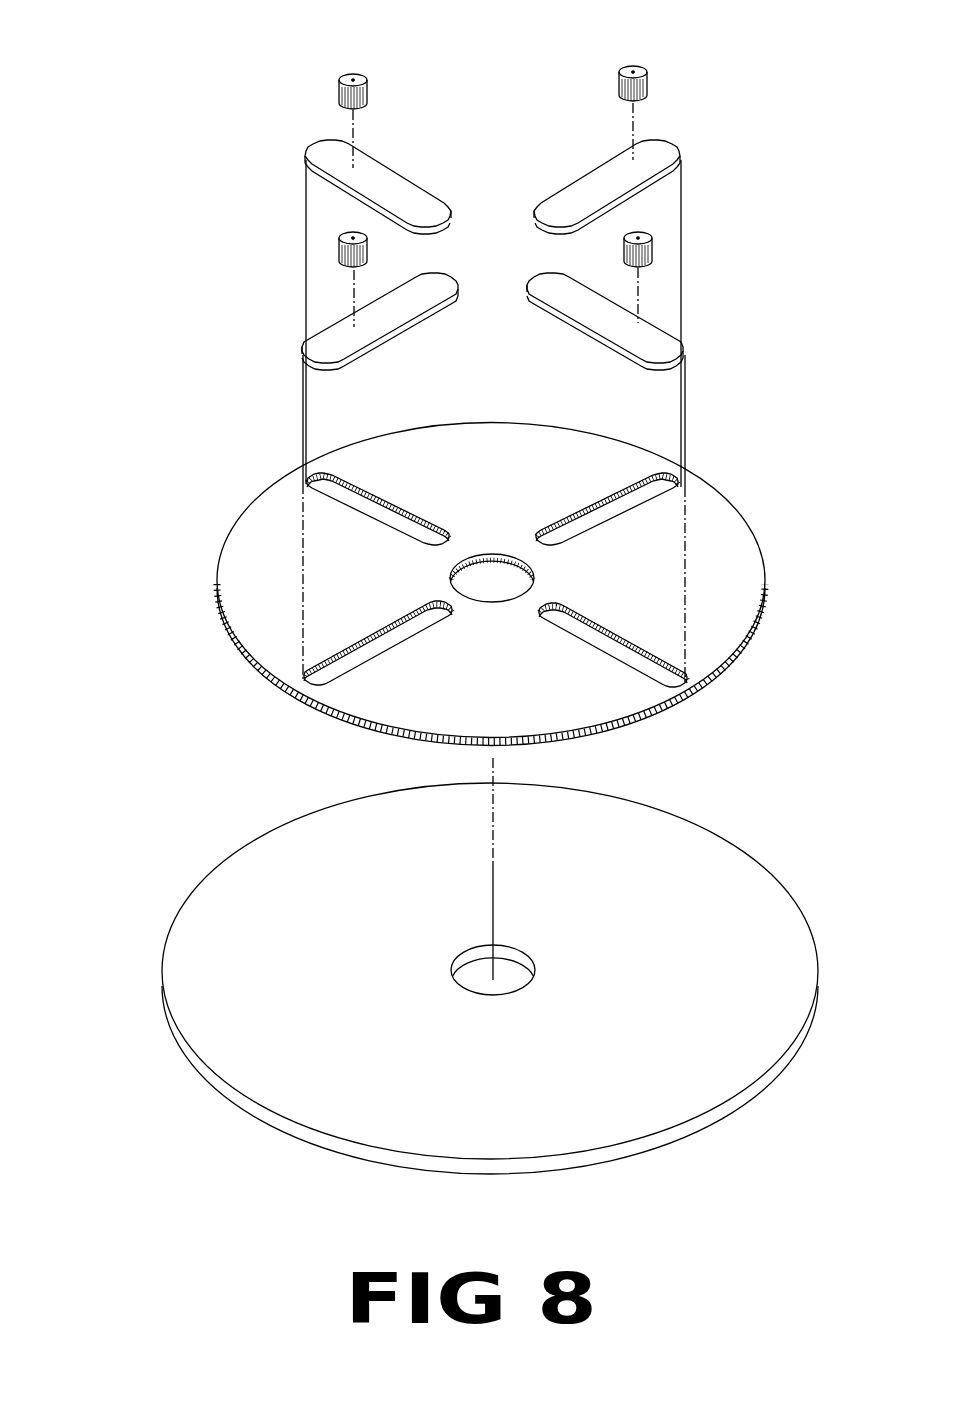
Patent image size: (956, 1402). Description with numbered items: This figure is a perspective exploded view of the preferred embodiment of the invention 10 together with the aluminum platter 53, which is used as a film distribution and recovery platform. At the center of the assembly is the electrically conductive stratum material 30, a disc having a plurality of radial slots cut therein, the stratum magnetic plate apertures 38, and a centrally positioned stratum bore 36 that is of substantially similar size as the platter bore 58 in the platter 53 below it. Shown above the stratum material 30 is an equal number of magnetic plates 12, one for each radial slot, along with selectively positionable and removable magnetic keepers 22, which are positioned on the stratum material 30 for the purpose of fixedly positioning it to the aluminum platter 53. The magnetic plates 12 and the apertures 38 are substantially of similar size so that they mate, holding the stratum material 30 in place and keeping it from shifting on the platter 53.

The exploded assembly 10 is at (180, 98).
The magnetic plate 12 is at (553, 215).
The magnetic keeper 22 is at (348, 230).
The electrically conductive stratum material 30 is at (238, 577).
The stratum bore 36 is at (487, 582).
The stratum magnetic plate aperture 38 is at (413, 623).
The platter 53 is at (338, 976).
The platter bore 58 is at (471, 956).